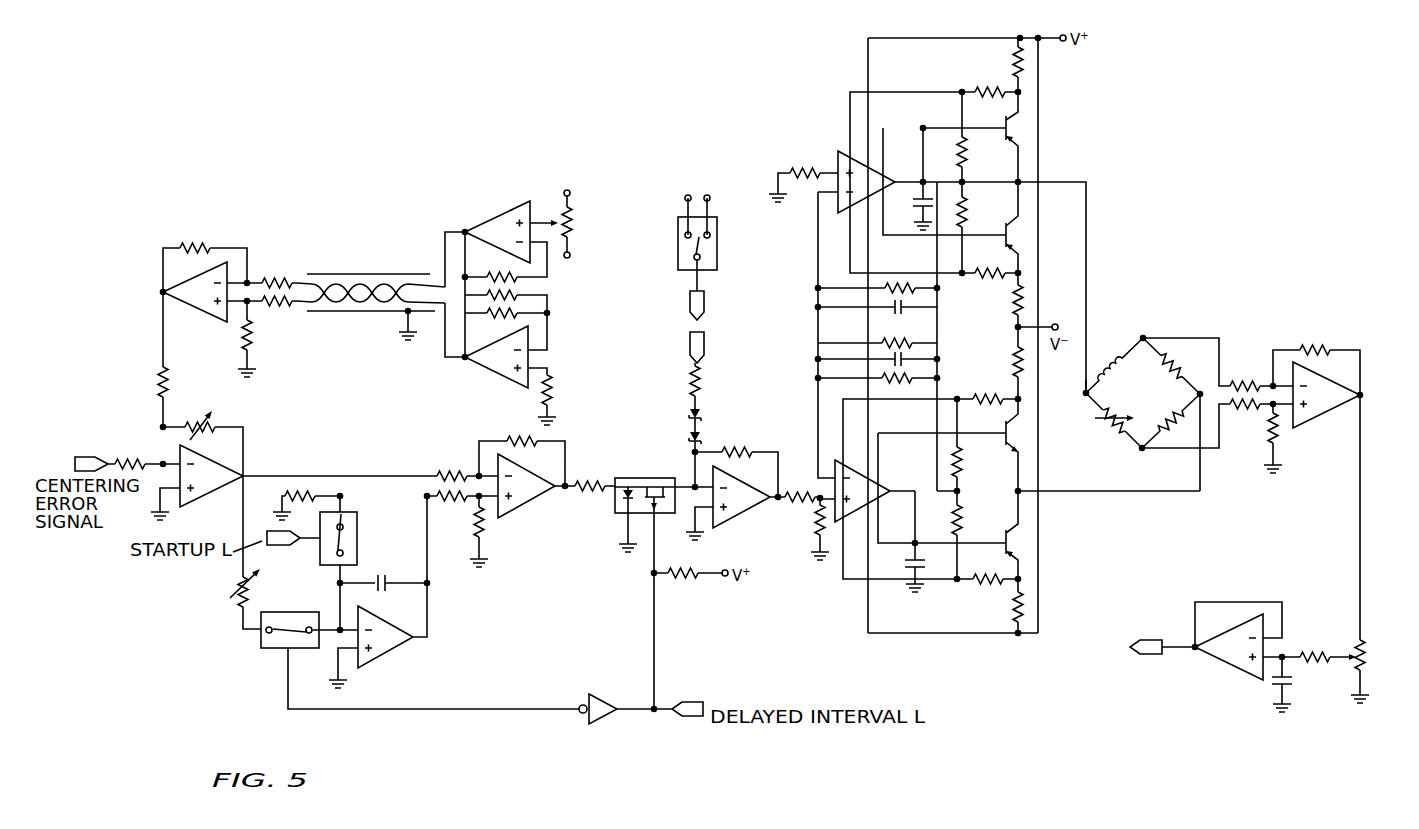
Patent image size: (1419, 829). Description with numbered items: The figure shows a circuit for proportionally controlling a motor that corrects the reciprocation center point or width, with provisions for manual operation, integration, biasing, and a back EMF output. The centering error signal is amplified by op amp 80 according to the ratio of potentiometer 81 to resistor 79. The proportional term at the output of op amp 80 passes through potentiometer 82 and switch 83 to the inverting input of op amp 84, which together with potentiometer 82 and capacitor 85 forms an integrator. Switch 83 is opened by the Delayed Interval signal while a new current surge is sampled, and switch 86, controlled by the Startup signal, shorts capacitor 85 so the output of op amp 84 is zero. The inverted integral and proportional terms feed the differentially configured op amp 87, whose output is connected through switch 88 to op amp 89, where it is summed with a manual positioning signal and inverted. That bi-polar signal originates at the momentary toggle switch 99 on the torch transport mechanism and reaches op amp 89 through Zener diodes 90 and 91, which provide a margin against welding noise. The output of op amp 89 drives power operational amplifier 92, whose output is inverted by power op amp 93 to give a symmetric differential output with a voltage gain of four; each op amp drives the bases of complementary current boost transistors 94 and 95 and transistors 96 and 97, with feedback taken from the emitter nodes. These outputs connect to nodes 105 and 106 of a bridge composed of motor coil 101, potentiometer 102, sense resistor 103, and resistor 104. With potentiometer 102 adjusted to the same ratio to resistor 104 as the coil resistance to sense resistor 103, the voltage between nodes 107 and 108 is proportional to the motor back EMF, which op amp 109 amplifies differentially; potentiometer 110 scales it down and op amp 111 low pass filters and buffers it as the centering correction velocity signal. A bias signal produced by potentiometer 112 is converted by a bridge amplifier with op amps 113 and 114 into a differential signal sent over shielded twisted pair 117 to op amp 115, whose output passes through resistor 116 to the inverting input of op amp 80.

The resistor 79 is at (119, 452).
The op amp 80 is at (203, 488).
The potentiometer 81 is at (201, 434).
The potentiometer 82 is at (238, 590).
The switch 83 is at (262, 645).
The op amp 84 is at (391, 648).
The capacitor 85 is at (386, 579).
The switch 86 is at (358, 541).
The op amp 87 is at (525, 476).
The switch 88 is at (615, 512).
The op amp 89 is at (745, 512).
The Zener diode 90 is at (702, 411).
The Zener diode 91 is at (701, 437).
The power operational amplifier 92 is at (878, 491).
The power op amp 93 is at (838, 163).
The transistor 94 is at (1002, 543).
The transistor 95 is at (1003, 433).
The transistor 96 is at (1004, 235).
The transistor 97 is at (1004, 128).
The momentary toggle switch 99 is at (718, 264).
The motor coil 101 is at (1106, 372).
The potentiometer 102 is at (1108, 426).
The sense resistor 103 is at (1173, 365).
The resistor 104 is at (1173, 420).
The node 105 is at (1197, 394).
The node 106 is at (1089, 393).
The node 107 is at (1140, 450).
The node 108 is at (1147, 338).
The op amp 109 is at (1318, 378).
The potentiometer 110 is at (1365, 657).
The op amp 111 is at (1231, 666).
The potentiometer 112 is at (571, 215).
The op amp 113 is at (500, 213).
The op amp 114 is at (497, 380).
The op amp 115 is at (185, 283).
The resistor 116 is at (158, 380).
The shielded twisted pair 117 is at (352, 316).